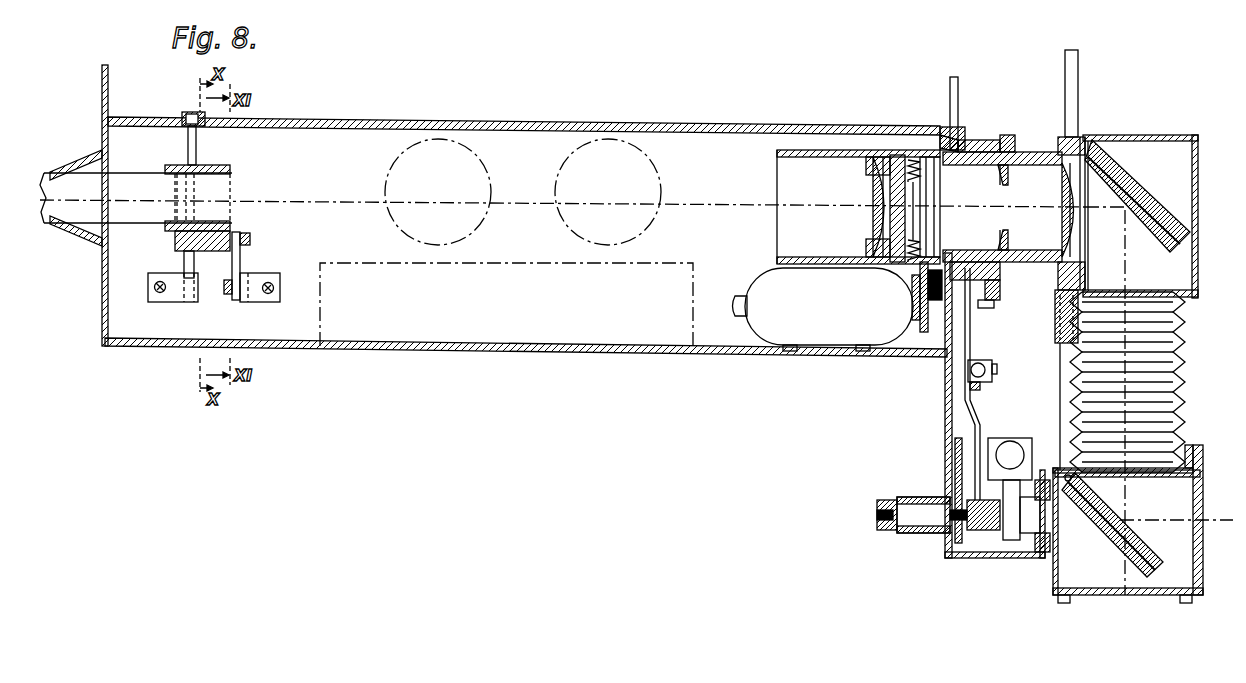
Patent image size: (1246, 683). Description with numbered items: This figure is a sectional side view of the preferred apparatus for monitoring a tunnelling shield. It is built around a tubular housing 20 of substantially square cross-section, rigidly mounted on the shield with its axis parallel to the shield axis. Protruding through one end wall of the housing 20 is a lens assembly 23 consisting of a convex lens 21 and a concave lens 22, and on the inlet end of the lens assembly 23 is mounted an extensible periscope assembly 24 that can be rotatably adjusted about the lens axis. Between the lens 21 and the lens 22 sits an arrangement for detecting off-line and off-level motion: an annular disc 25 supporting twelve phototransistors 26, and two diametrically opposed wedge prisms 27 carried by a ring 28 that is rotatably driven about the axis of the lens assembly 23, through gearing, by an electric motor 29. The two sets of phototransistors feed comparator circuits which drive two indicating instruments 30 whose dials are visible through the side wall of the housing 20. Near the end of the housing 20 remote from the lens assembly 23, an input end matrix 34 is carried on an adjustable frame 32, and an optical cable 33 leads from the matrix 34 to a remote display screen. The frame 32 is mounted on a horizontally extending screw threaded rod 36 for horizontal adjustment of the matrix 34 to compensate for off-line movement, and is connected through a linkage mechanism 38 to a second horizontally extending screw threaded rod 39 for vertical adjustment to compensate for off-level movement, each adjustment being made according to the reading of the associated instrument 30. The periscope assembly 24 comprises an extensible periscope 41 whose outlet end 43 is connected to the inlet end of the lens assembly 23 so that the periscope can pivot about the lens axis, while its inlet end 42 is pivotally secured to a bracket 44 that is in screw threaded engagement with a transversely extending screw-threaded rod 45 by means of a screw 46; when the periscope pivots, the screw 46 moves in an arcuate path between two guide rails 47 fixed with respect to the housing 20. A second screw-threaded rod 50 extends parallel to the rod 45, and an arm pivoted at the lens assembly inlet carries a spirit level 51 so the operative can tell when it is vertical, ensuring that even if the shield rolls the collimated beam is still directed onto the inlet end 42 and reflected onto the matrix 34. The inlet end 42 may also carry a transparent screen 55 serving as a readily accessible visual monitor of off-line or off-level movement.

The tubular housing 20 is at (525, 122).
The convex lens 21 is at (1066, 192).
The concave lens 22 is at (876, 188).
The lens assembly 23 is at (892, 146).
The extensible periscope assembly 24 is at (1187, 380).
The annular disc 25 is at (915, 160).
The phototransistors 26 is at (952, 130).
The wedge prisms 27 is at (1000, 172).
The ring 28 is at (975, 148).
The electric motor 29 is at (822, 334).
The indicating instruments 30 is at (408, 152).
The adjustable frame 32 is at (188, 140).
The optical cable 33 is at (78, 212).
The input end matrix 34 is at (232, 186).
The horizontally extending screw threaded rod 36 is at (160, 294).
The linkage mechanism 38 is at (240, 263).
The second horizontally extending screw threaded rod 39 is at (270, 296).
The extensible periscope 41 is at (1165, 352).
The inlet end 42 is at (1110, 600).
The outlet end 43 is at (1152, 130).
The bracket 44 is at (997, 442).
The transversely extending screw-threaded rod 45 is at (1012, 448).
The screw 46 is at (1030, 518).
The guide rails 47 is at (1044, 482).
The second screw-threaded rod 50 is at (993, 522).
The spirit level 51 is at (986, 366).
The transparent screen 55 is at (1203, 530).